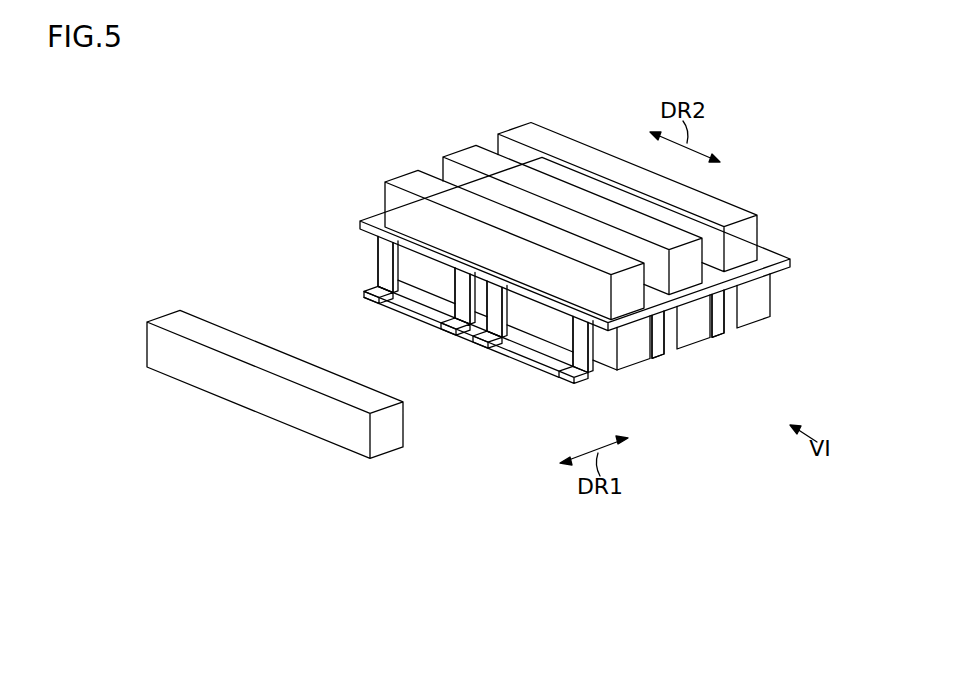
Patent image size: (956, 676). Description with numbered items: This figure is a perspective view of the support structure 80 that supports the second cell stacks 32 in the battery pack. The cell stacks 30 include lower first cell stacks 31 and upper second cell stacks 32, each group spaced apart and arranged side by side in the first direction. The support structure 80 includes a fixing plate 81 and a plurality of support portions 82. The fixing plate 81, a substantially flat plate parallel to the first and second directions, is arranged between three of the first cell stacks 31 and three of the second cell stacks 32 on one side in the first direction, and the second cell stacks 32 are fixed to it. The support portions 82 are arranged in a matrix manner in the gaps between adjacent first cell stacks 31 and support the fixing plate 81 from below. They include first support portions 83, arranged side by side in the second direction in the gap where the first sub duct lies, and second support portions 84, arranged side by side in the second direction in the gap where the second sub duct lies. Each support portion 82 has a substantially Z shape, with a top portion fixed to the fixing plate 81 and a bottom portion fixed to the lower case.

The cell stacks 30 is at (477, 250).
The first cell stacks 31 is at (783, 363).
The second cell stacks 32 is at (571, 176).
The support structure 80 is at (525, 378).
The fixing plate 81 is at (769, 258).
The support portions 82 is at (551, 339).
The first support portions 83 is at (402, 352).
The second support portions 84 is at (677, 364).